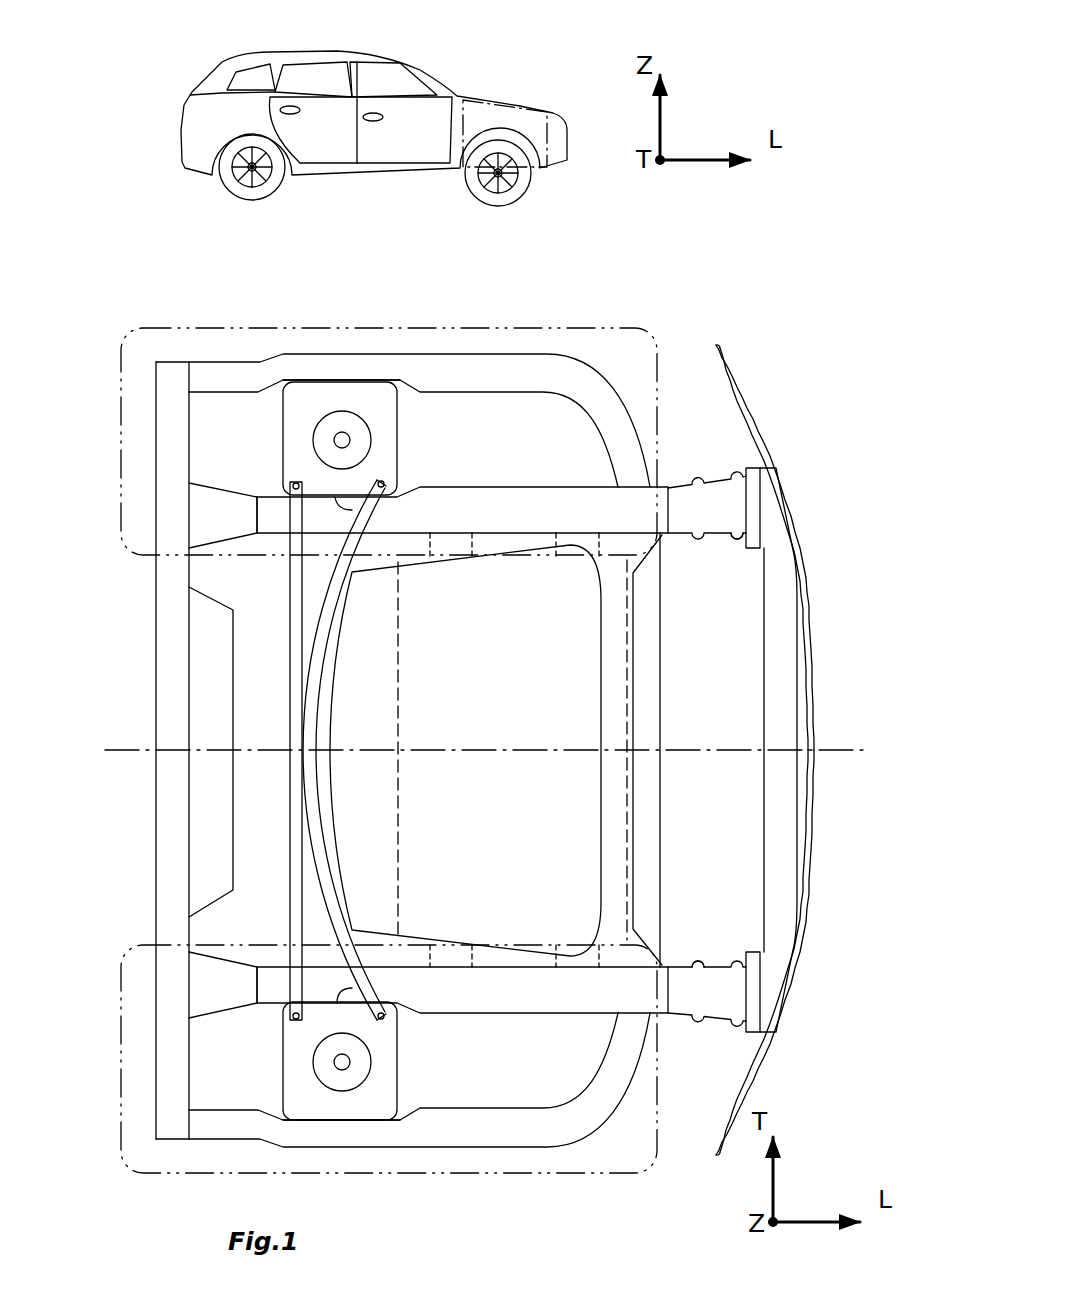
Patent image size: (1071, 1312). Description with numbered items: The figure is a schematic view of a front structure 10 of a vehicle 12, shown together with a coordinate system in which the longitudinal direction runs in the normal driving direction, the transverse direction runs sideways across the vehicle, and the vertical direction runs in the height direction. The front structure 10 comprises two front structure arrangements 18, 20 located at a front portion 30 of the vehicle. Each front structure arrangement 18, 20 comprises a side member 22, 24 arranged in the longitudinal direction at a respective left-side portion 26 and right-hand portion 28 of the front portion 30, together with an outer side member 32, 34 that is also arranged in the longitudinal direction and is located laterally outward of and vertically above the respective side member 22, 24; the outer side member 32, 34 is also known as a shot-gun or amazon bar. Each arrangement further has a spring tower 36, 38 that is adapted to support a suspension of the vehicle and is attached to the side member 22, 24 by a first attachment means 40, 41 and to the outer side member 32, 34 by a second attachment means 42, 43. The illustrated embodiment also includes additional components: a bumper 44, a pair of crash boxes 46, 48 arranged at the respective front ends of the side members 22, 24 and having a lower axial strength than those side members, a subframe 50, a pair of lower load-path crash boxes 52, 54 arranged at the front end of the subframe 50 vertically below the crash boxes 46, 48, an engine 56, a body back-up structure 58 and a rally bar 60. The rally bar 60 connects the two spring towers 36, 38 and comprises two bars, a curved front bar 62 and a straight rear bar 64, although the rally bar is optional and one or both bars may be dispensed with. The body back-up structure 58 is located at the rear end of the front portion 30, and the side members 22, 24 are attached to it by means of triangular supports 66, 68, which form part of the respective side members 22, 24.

The front structure 10 is at (517, 150).
The vehicle 12 is at (472, 68).
The front structure arrangement 18 is at (558, 325).
The front structure arrangement 20 is at (552, 1173).
The side member 22 is at (483, 505).
The side member 24 is at (523, 993).
The left-side portion 26 is at (876, 684).
The right-hand portion 28 is at (876, 859).
The front portion 30 is at (547, 98).
The outer side member 32 is at (475, 377).
The outer side member 34 is at (445, 1123).
The spring tower 36 is at (380, 413).
The spring tower 38 is at (380, 1040).
The first attachment means 40 is at (352, 510).
The first attachment means 41 is at (352, 988).
The second attachment means 42 is at (333, 380).
The second attachment means 43 is at (327, 1117).
The bumper 44 is at (780, 648).
The crash box 46 is at (700, 500).
The crash box 48 is at (713, 1000).
The subframe 50 is at (274, 692).
The lower load-path crash box 52 is at (721, 522).
The lower load-path crash box 54 is at (717, 985).
The engine 56 is at (504, 694).
The body back-up structure 58 is at (155, 805).
The rally bar 60 is at (290, 750).
The front bar 62 is at (313, 850).
The rear bar 64 is at (293, 813).
The triangular support 66 is at (205, 507).
The triangular support 68 is at (210, 992).